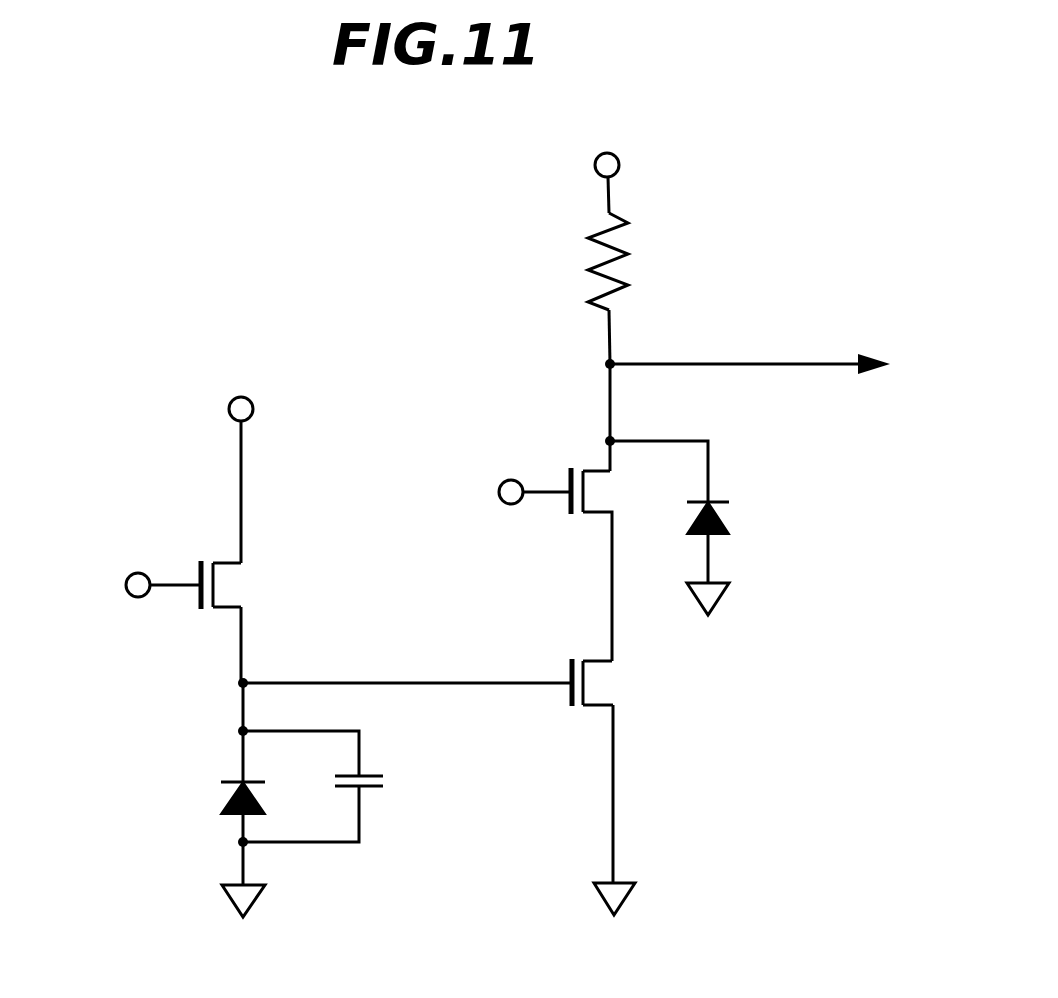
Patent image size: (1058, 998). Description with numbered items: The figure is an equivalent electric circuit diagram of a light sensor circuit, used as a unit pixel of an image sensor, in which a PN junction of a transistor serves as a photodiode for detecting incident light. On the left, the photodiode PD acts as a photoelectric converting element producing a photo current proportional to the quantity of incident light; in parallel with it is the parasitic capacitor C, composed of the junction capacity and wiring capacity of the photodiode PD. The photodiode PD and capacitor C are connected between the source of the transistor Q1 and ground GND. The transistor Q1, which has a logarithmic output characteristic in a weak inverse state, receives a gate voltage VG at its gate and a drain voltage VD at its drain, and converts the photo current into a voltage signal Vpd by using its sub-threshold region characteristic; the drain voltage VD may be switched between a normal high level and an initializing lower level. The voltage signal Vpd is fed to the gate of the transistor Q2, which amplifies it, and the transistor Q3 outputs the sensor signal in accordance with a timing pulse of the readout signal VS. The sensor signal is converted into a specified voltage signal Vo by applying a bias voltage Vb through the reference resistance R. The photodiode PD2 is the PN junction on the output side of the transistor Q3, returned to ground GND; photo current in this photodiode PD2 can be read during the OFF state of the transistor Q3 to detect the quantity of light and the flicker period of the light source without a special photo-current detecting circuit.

The transistor Q1 is at (199, 608).
The transistor Q2 is at (585, 669).
The transistor Q3 is at (586, 512).
The photodiode PD is at (213, 786).
The photodiode PD2 is at (705, 490).
The parasitic capacitor C is at (331, 786).
The reference resistance R is at (591, 288).
The drain voltage VD is at (241, 464).
The gate voltage VG is at (139, 588).
The readout signal VS is at (511, 495).
The bias voltage Vb is at (611, 165).
The voltage signal Vo is at (770, 367).
The voltage signal Vpd is at (405, 689).
The ground GND is at (479, 747).